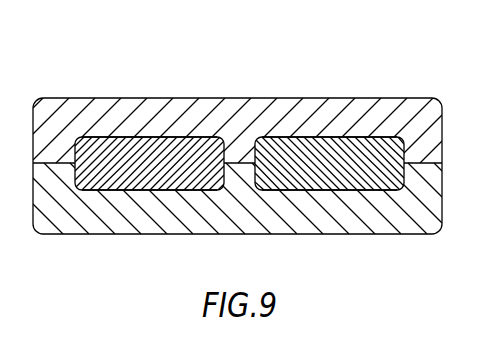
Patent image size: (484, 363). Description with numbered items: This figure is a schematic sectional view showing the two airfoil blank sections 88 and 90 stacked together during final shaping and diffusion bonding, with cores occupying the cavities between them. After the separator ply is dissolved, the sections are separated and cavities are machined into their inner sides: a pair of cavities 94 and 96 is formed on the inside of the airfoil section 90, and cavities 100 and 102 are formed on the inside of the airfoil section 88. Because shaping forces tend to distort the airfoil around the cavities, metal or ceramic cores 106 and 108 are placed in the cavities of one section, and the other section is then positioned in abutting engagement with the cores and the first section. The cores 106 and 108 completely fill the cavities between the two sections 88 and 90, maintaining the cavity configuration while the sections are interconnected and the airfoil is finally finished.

The airfoil blank section 88 is at (246, 97).
The airfoil blank section 90 is at (81, 237).
The core 108 is at (110, 158).
The cavity 102 is at (163, 137).
The cavity 96 is at (163, 191).
The core 106 is at (361, 173).
The cavity 100 is at (333, 137).
The cavity 94 is at (320, 191).